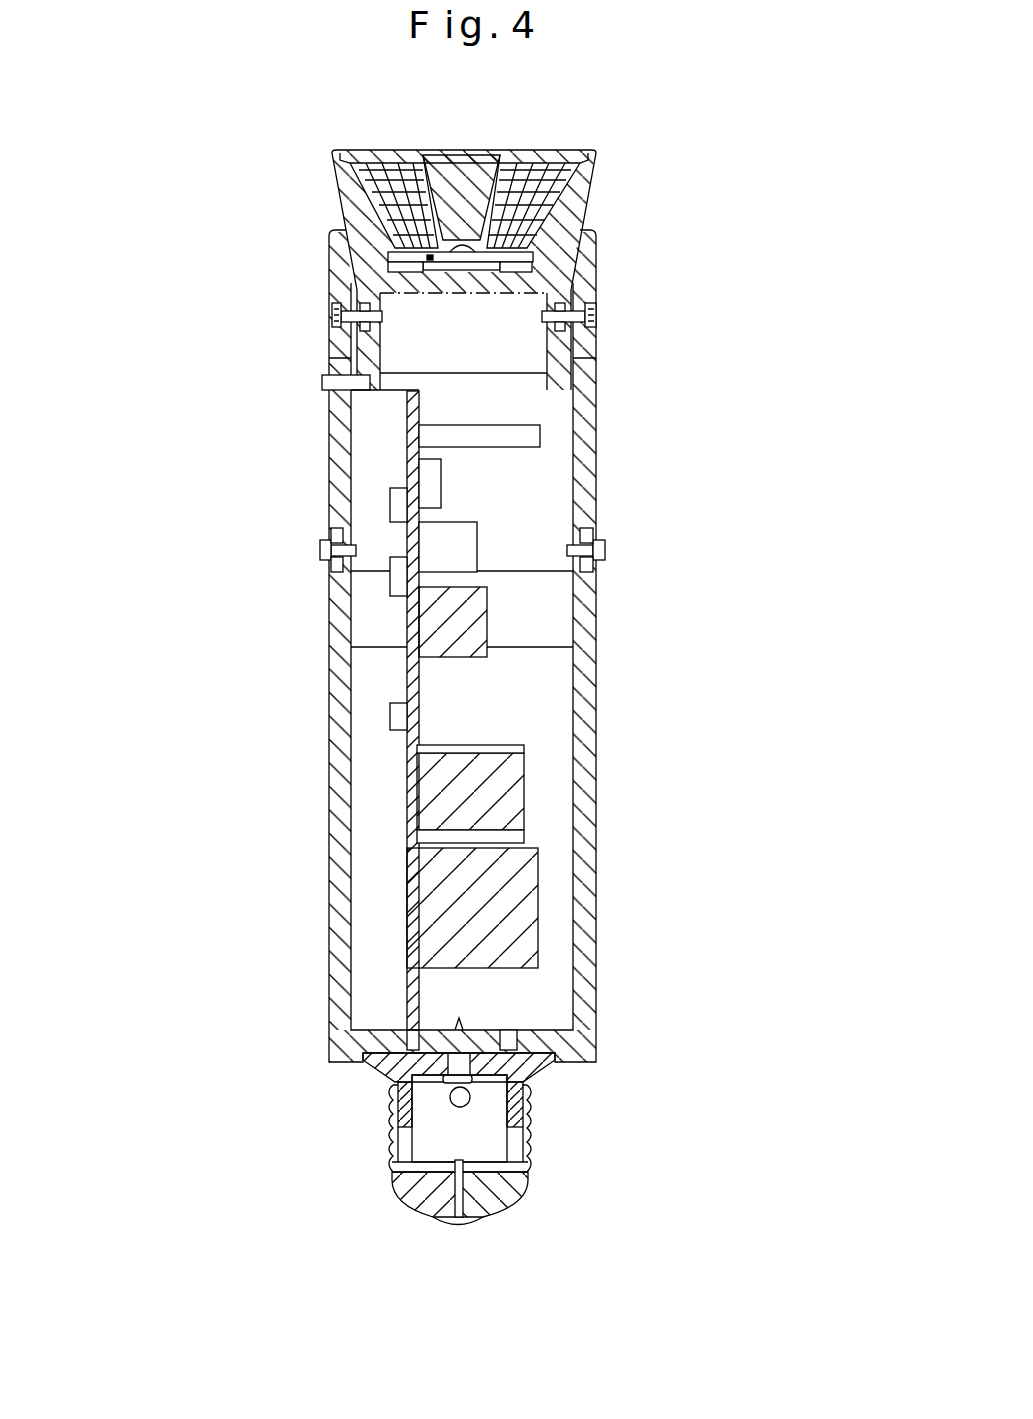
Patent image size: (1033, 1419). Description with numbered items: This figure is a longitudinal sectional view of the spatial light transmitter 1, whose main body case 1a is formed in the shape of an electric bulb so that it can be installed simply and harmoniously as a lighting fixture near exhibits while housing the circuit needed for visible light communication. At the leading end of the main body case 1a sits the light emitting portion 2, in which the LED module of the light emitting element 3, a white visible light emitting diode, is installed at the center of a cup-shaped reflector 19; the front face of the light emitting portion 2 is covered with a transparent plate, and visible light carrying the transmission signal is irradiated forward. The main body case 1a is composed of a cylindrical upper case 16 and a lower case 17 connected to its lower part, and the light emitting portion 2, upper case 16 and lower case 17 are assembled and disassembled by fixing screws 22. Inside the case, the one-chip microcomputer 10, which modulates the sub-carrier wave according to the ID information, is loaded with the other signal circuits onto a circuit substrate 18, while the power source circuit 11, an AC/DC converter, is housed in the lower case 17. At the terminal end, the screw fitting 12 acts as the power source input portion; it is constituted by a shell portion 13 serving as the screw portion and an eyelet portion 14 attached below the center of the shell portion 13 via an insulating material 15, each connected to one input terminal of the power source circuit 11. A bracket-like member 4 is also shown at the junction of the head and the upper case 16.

The spatial light transmitter 1 is at (675, 517).
The main body case 1a is at (172, 455).
The light emitting portion 2 is at (540, 238).
The light emitting element 3 is at (460, 243).
The bracket 4 is at (323, 382).
The microcomputer 10 is at (441, 485).
The power source circuit 11 is at (527, 790).
The screw fitting 12 is at (530, 1120).
The shell portion 13 is at (392, 1120).
The eyelet portion 14 is at (470, 1222).
The insulating material 15 is at (522, 1095).
The upper case 16 is at (595, 432).
The lower case 17 is at (340, 627).
The circuit substrate 18 is at (407, 677).
The reflector 19 is at (530, 215).
The fixing screws 22 is at (333, 322).